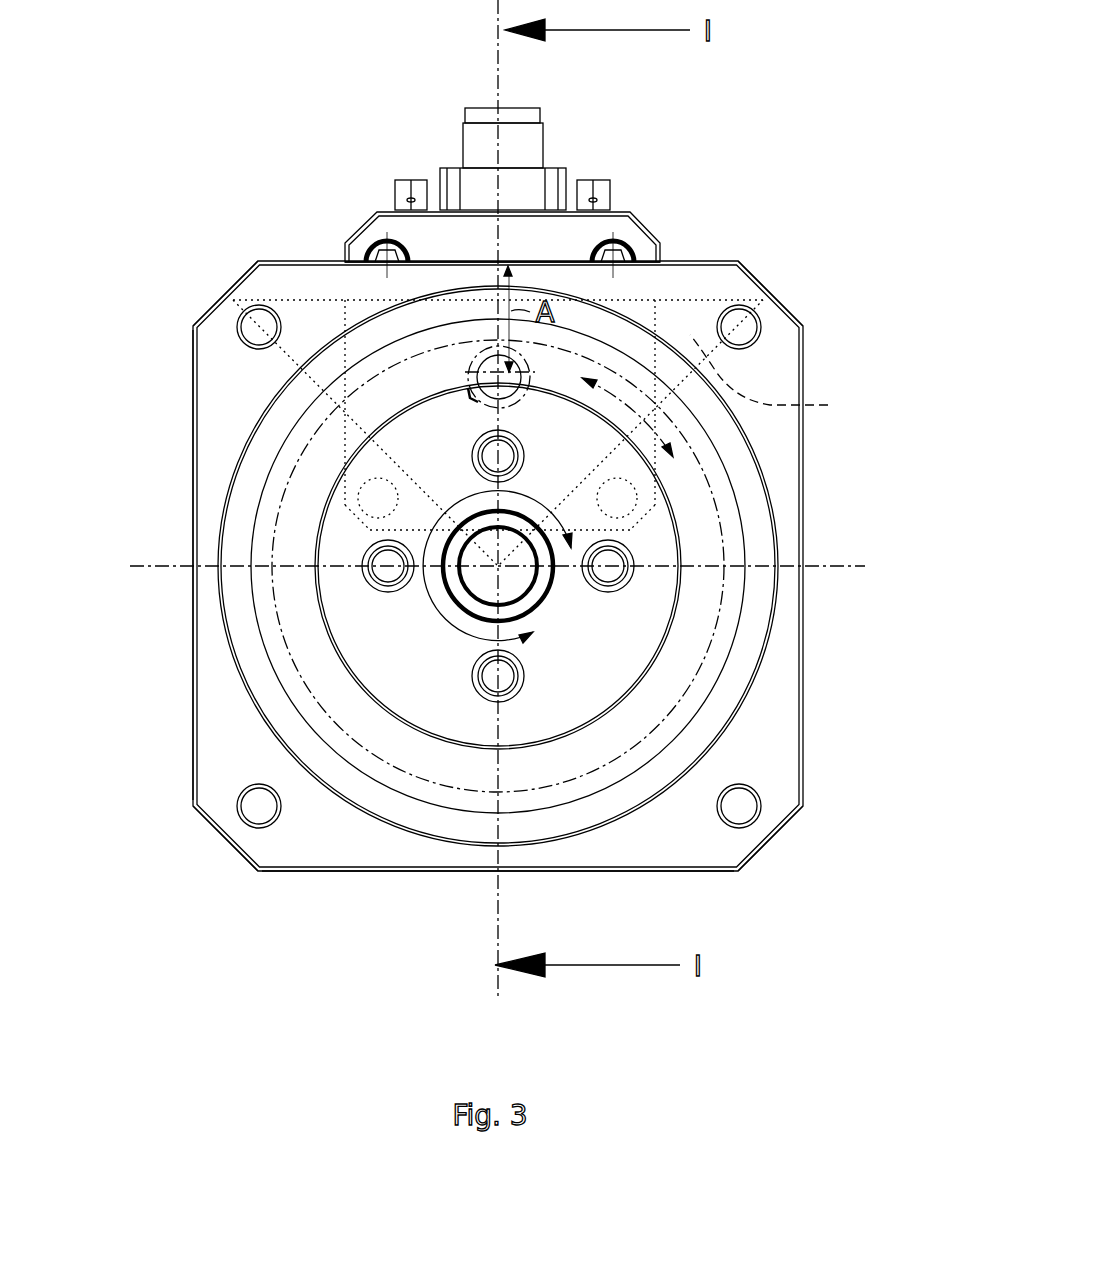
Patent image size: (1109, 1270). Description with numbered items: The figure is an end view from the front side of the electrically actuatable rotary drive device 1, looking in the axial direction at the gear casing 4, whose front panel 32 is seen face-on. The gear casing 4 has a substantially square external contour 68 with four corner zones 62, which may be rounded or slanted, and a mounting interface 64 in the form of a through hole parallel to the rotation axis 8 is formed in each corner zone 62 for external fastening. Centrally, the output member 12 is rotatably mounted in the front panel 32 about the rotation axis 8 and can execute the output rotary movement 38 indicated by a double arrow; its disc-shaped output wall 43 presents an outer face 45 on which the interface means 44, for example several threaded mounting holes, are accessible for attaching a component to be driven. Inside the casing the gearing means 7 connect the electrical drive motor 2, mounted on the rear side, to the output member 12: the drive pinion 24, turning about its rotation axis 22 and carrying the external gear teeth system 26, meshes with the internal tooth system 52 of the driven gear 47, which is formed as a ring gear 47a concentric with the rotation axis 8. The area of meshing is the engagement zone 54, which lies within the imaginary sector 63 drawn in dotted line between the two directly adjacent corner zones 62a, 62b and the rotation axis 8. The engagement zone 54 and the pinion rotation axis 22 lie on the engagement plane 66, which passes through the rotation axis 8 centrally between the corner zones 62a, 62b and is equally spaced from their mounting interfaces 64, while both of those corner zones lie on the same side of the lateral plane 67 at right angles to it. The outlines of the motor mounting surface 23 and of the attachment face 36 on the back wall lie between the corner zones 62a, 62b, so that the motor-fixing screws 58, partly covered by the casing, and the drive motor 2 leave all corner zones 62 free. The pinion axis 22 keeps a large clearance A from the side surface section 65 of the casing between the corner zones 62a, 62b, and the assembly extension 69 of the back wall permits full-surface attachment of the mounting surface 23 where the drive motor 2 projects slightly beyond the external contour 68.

The rotary drive device 1 is at (475, 460).
The electrical drive motor 2 is at (620, 196).
The gear casing 4 is at (182, 447).
The gearing means 7 is at (566, 566).
The rotation axis 8 is at (500, 570).
The output member 12 is at (572, 735).
The rotation axis 22 is at (470, 375).
The mounting surface 23 is at (525, 368).
The drive pinion 24 is at (526, 408).
The external gear teeth system 26 is at (462, 418).
The front panel 32 is at (311, 848).
The attachment face 36 is at (655, 290).
The output rotary movement 38 is at (437, 613).
The output wall 43 is at (337, 596).
The interface means 44 is at (505, 465).
The outer face 45 is at (430, 712).
The driven gear 47 is at (498, 566).
The ring gear 47a is at (498, 566).
The internal tooth system 52 is at (708, 660).
The engagement zone 54 is at (470, 340).
The motor-fixing screws 58 is at (383, 243).
The corner zones 62 is at (505, 567).
The corner zone 62a is at (242, 290).
The corner zone 62b is at (745, 282).
The imaginary sector 63 is at (778, 379).
The mounting interface 64 is at (250, 338).
The side surface section 65 is at (433, 258).
The engagement plane 66 is at (500, 912).
The lateral plane 67 is at (842, 565).
The external contour 68 is at (179, 710).
The assembly extension 69 is at (540, 225).